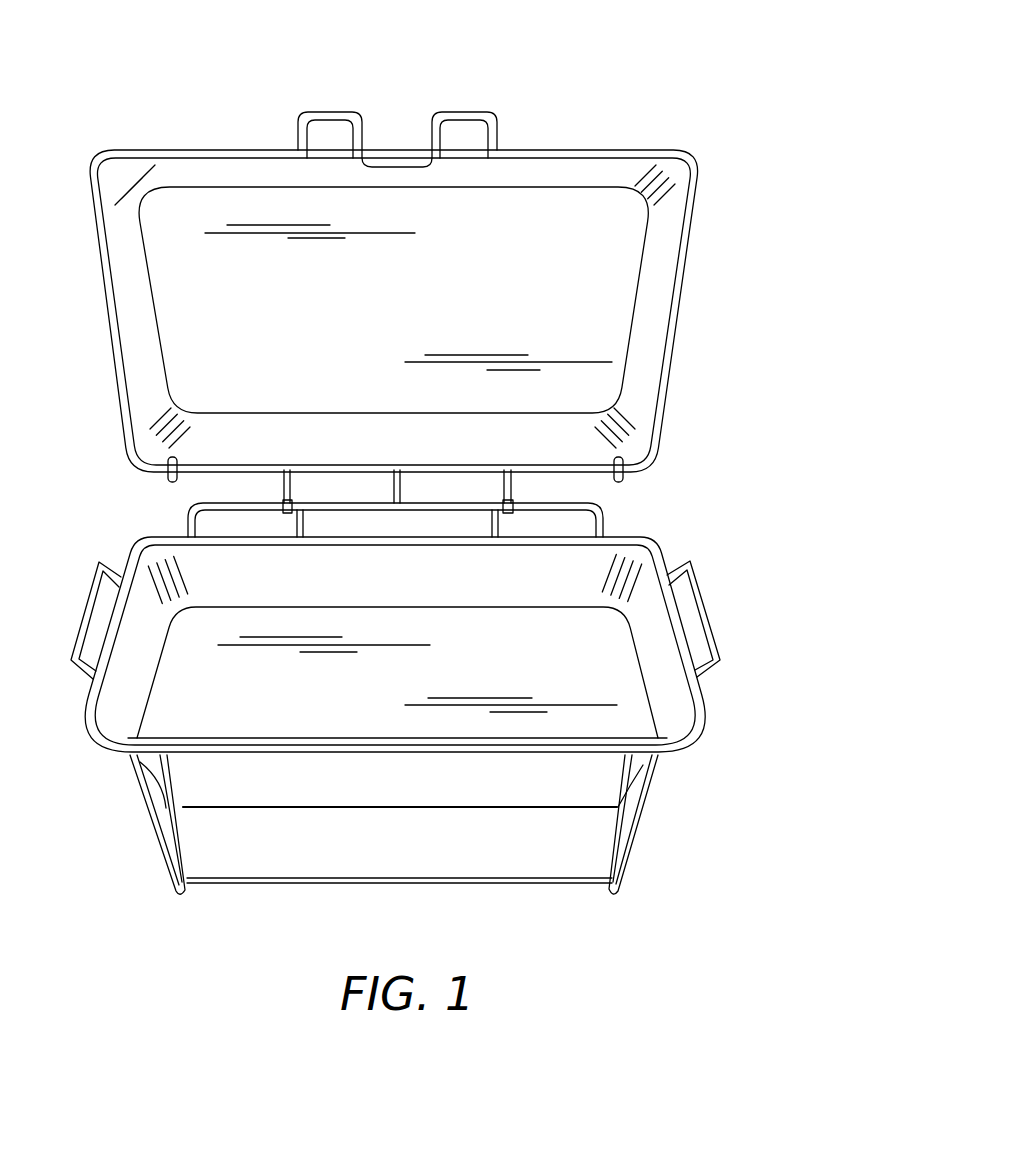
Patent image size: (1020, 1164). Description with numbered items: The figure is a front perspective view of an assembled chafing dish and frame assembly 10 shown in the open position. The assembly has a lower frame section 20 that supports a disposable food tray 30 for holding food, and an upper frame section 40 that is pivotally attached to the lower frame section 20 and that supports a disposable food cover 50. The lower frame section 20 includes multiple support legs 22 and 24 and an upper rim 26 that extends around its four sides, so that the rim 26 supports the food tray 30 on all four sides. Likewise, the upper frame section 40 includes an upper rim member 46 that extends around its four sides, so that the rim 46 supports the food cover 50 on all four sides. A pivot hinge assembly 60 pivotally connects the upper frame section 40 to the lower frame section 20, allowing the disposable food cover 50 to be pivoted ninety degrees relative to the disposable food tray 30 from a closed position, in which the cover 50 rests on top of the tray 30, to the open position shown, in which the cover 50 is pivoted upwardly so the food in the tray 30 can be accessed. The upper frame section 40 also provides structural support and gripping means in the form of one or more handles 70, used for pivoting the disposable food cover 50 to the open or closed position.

The chafing dish and frame assembly 10 is at (814, 392).
The lower frame section 20 is at (656, 775).
The support leg 22 is at (158, 829).
The support leg 24 is at (641, 835).
The upper rim 26 is at (698, 718).
The disposable food tray 30 is at (508, 660).
The upper frame section 40 is at (662, 436).
The upper rim member 46 is at (686, 283).
The disposable food cover 50 is at (518, 284).
The pivot hinge assembly 60 is at (600, 505).
The handle 70 is at (457, 108).